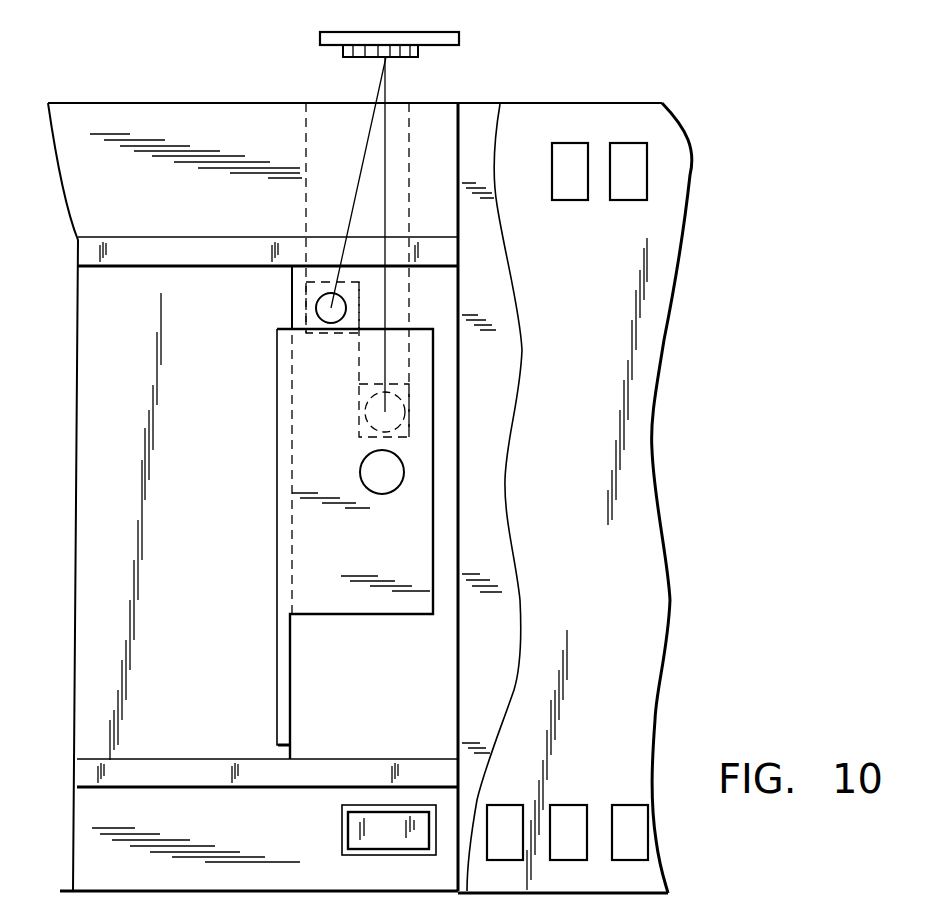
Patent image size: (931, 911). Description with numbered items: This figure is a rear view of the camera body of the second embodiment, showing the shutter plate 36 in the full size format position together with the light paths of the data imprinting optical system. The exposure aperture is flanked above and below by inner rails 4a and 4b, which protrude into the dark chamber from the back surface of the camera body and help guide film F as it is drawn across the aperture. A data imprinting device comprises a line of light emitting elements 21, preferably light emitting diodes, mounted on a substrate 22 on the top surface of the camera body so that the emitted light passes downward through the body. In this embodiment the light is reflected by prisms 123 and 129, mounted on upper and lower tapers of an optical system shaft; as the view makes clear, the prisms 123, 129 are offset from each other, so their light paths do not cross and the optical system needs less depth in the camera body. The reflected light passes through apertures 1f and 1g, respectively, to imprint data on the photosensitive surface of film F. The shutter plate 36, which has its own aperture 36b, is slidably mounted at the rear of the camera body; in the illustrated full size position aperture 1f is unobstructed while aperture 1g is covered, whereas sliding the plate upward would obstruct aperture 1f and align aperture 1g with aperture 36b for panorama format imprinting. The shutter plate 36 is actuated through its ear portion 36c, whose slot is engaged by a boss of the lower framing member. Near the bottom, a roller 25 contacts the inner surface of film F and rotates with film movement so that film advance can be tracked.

The substrate 22 is at (407, 32).
The light emitting elements 21 is at (418, 65).
The inner rail 4a is at (120, 245).
The inner rail 4b is at (206, 780).
The aperture 1f is at (322, 294).
The prism 123 is at (304, 295).
The prism 129 is at (403, 392).
The aperture 1g is at (362, 408).
The aperture 36b is at (384, 492).
The shutter plate 36 is at (375, 607).
The ear portion 36c is at (287, 715).
The roller 25 is at (357, 830).
The film F is at (576, 466).